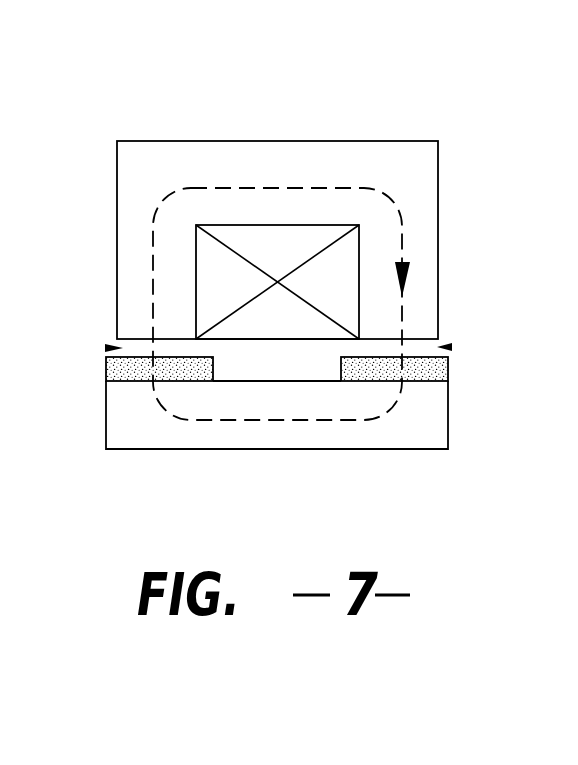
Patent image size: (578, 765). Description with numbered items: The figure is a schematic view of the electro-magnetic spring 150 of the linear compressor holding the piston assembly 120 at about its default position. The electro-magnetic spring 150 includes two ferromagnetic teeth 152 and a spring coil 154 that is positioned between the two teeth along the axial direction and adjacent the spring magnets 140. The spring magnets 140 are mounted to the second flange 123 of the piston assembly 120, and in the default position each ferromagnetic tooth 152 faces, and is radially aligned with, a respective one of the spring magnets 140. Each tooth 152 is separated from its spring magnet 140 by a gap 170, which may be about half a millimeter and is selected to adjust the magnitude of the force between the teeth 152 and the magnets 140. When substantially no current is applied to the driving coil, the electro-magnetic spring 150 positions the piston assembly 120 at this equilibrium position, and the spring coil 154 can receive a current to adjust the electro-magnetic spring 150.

The electro-magnetic spring 150 is at (248, 176).
The spring coil 154 is at (292, 247).
The ferromagnetic teeth 152 is at (133, 318).
The gap 170 is at (105, 348).
The spring magnets 140 is at (105, 366).
The piston assembly 120 is at (166, 468).
The second flange 123 is at (405, 437).